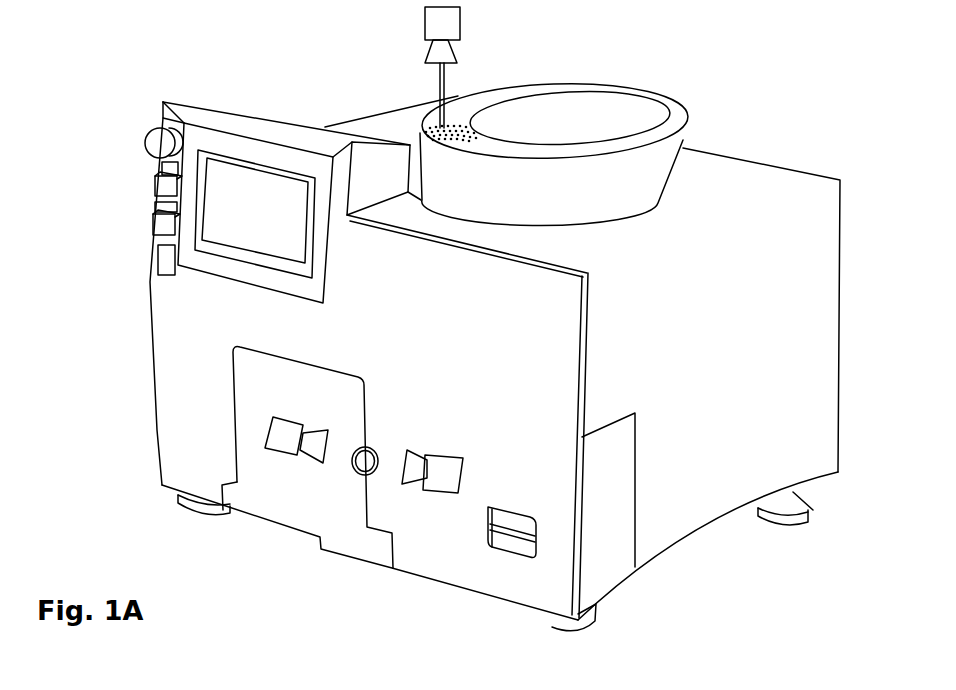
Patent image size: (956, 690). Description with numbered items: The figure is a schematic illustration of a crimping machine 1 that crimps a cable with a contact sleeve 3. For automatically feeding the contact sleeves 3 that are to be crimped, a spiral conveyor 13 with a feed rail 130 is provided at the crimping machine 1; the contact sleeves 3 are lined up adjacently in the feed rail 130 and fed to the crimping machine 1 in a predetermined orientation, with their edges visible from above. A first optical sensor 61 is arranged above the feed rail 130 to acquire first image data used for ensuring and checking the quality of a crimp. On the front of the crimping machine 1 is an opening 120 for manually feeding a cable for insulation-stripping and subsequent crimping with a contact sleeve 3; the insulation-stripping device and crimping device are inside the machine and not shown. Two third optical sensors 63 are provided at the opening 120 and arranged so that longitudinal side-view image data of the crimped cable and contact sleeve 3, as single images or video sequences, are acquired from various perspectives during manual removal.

The crimping machine 1 is at (207, 65).
The contact sleeve 3 is at (430, 124).
The spiral conveyor 13 is at (583, 130).
The feed rail 130 is at (474, 186).
The first optical sensor 61 is at (445, 25).
The opening 120 is at (370, 450).
The third optical sensors 63 is at (287, 457).